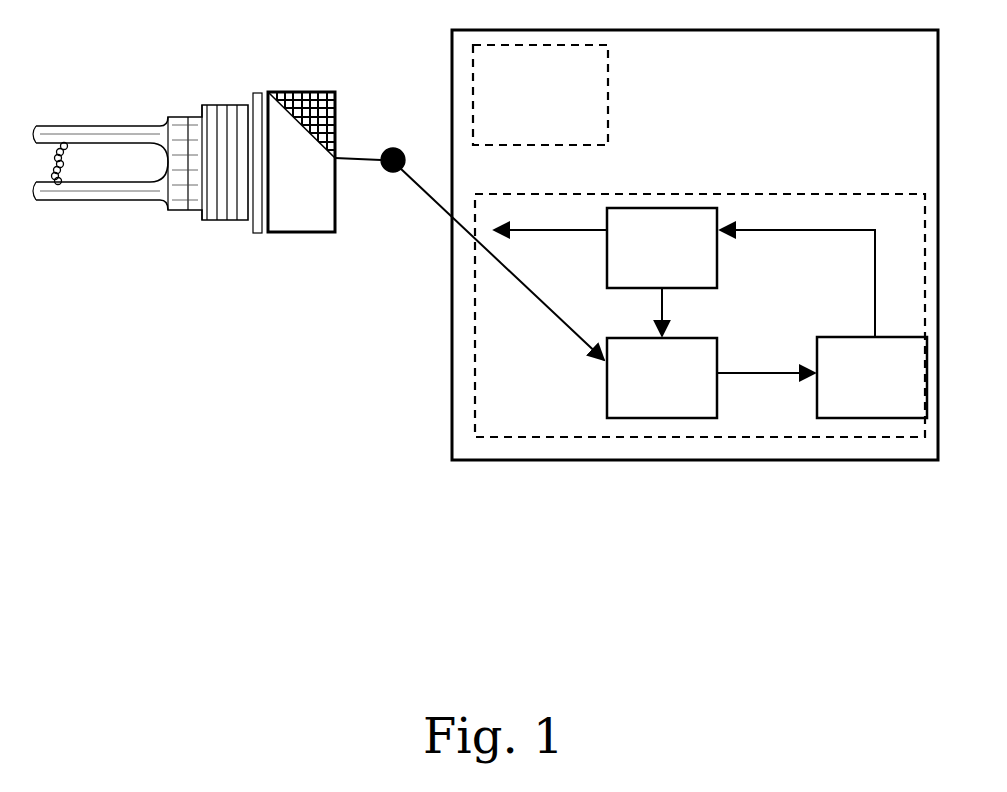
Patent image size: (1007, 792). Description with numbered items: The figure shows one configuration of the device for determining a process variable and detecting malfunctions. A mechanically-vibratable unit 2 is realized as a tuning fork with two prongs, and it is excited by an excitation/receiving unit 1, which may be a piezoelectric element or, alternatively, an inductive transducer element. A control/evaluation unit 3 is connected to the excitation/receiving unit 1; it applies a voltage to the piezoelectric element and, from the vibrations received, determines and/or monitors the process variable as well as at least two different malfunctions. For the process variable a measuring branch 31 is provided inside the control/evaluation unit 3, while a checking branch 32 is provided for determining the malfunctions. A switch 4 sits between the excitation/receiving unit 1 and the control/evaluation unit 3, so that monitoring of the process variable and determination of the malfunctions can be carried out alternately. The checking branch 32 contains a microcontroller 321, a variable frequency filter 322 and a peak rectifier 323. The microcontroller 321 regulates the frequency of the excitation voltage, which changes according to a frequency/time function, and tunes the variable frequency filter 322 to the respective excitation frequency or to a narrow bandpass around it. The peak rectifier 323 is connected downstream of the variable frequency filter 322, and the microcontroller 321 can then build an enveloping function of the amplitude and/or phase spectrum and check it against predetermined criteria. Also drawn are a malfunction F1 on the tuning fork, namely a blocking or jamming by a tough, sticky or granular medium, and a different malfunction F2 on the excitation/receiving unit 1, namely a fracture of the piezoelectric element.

The excitation/receiving unit 1 is at (307, 232).
The mechanically-vibratable unit 2 is at (147, 122).
The control/evaluation unit 3 is at (452, 462).
The switch 4 is at (390, 175).
The measuring branch 31 is at (608, 75).
The checking branch 32 is at (800, 193).
The microcontroller 321 is at (718, 255).
The variable frequency filter 322 is at (672, 418).
The peak rectifier 323 is at (885, 420).
The malfunction F1 is at (71, 160).
The malfunction F2 is at (325, 93).